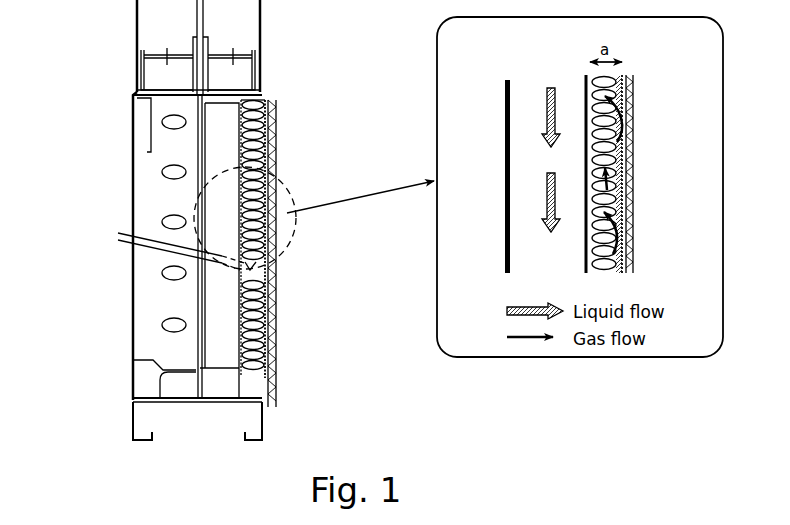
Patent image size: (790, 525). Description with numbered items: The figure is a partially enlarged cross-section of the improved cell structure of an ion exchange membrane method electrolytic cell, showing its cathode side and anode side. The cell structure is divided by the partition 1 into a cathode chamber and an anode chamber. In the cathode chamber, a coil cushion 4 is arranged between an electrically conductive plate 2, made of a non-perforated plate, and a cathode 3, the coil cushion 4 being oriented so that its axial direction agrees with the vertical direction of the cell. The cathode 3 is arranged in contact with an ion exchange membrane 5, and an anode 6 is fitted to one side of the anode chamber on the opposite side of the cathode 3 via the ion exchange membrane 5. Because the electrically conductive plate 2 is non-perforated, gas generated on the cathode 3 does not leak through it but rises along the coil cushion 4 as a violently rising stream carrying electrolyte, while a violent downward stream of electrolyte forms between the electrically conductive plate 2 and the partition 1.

The partition 1 is at (204, 167).
The electrically conductive plate 2 is at (270, 103).
The cathode 3 is at (266, 286).
The coil cushion 4 is at (270, 140).
The ion exchange membrane 5 is at (277, 338).
The anode 6 is at (128, 303).